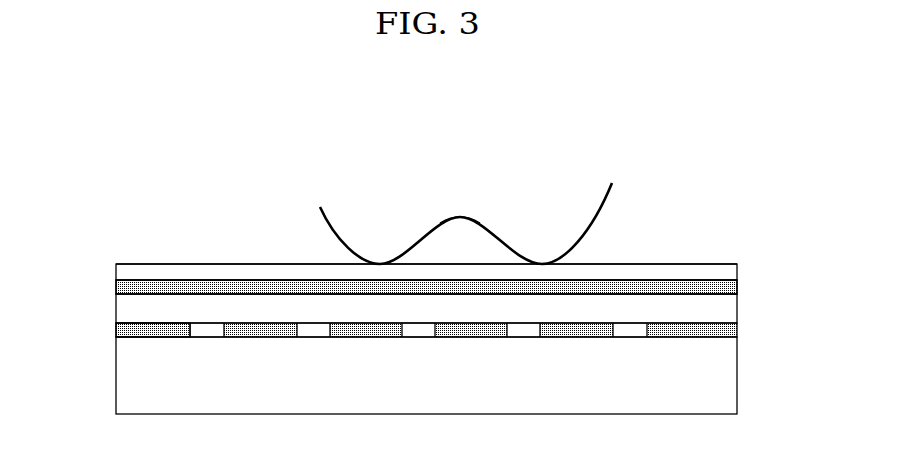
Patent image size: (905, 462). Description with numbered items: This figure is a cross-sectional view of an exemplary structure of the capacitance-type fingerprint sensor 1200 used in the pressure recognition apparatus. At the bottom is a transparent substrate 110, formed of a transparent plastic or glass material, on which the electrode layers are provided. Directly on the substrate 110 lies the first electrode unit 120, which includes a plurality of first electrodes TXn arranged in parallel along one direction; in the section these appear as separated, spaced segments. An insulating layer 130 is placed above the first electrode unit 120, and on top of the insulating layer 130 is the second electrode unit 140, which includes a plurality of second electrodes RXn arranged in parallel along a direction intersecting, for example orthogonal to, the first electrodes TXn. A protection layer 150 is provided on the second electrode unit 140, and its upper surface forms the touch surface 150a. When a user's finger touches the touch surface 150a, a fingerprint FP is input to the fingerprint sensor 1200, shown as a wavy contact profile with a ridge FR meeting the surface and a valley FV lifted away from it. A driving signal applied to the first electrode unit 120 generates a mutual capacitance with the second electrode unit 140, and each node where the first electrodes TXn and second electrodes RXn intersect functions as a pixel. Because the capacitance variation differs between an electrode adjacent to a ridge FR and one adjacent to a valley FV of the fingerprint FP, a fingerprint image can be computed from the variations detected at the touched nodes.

The transparent substrate 110 is at (728, 375).
The first electrode unit 120 is at (749, 334).
The insulating layer 130 is at (728, 308).
The second electrode unit 140 is at (749, 289).
The protection layer 150 is at (732, 273).
The touch surface 150a is at (705, 263).
The fingerprint sensor 1200 is at (544, 197).
The fingerprint FP is at (598, 208).
The ridge FR is at (380, 262).
The valley FV is at (460, 216).
The second electrodes RXn is at (117, 283).
The first electrodes TXn is at (117, 328).